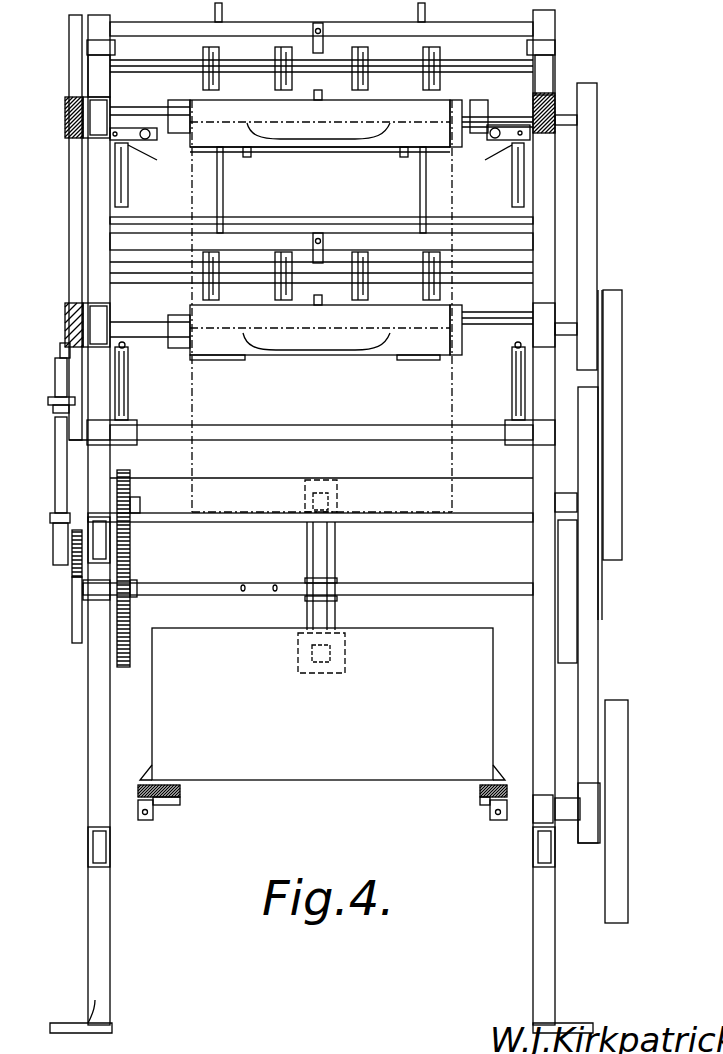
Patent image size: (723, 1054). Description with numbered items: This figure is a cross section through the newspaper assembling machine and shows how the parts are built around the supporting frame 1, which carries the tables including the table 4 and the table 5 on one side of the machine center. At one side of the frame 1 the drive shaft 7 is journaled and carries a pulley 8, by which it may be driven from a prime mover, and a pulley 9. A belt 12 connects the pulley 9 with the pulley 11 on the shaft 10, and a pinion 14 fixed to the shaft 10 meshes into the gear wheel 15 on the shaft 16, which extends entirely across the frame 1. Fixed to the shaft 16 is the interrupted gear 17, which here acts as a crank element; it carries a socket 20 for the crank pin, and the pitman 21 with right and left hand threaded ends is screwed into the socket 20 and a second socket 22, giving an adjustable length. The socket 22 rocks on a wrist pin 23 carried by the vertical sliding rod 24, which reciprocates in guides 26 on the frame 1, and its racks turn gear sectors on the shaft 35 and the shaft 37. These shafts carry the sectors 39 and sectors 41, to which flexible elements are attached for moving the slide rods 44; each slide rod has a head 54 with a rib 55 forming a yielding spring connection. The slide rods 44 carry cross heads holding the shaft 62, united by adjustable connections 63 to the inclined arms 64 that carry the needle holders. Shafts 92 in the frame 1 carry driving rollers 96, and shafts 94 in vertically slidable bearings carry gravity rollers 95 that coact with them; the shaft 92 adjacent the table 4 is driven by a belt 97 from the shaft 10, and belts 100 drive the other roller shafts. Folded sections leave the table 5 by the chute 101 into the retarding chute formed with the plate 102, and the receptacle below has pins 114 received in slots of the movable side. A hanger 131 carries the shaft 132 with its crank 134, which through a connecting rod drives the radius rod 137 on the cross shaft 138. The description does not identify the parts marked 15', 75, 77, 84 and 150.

The supporting frame 1 is at (548, 973).
The table 4 is at (470, 312).
The table 5 is at (475, 112).
The drive shaft 7 is at (600, 812).
The pulley 8 is at (625, 853).
The pulley 9 is at (600, 795).
The shaft 10 is at (575, 504).
The pulley 11 is at (602, 607).
The belt 12 is at (598, 670).
The pinion 14 is at (135, 480).
The gear wheel 15 is at (148, 568).
The gear 15' is at (615, 679).
The shaft 16 is at (160, 578).
The interrupted gear 17 is at (77, 643).
The socket 20 is at (53, 540).
The pitman 21 is at (55, 454).
The socket 22 is at (55, 380).
The wrist pin 23 is at (60, 352).
The sliding rod 24 is at (76, 183).
The guides 26 is at (65, 112).
The shaft 35 is at (318, 222).
The shaft 37 is at (388, 432).
The sectors 39 is at (128, 186).
The sectors 41 is at (128, 392).
The slide rods 44 is at (180, 125).
The head 54 is at (222, 105).
The rib 55 is at (133, 128).
The shaft 62 is at (323, 152).
The adjustable connections 63 is at (247, 156).
The inclined arms 64 is at (215, 14).
The bracket 75 is at (323, 50).
The top bar 77 is at (321, 136).
The pad 84 is at (238, 362).
The shafts 92 is at (452, 118).
The shafts 94 is at (143, 66).
The gravity rollers 95 is at (438, 88).
The driving rollers 96 is at (321, 306).
The belt 97 is at (622, 438).
The belts 100 is at (592, 215).
The chute 101 is at (318, 131).
The plate 102 is at (314, 340).
The pins 114 is at (180, 803).
The hanger 131 is at (335, 566).
The shaft 132 is at (258, 596).
The crank 134 is at (323, 582).
The radius rod 137 is at (318, 547).
The cross shaft 138 is at (337, 503).
The pin 150 is at (322, 94).